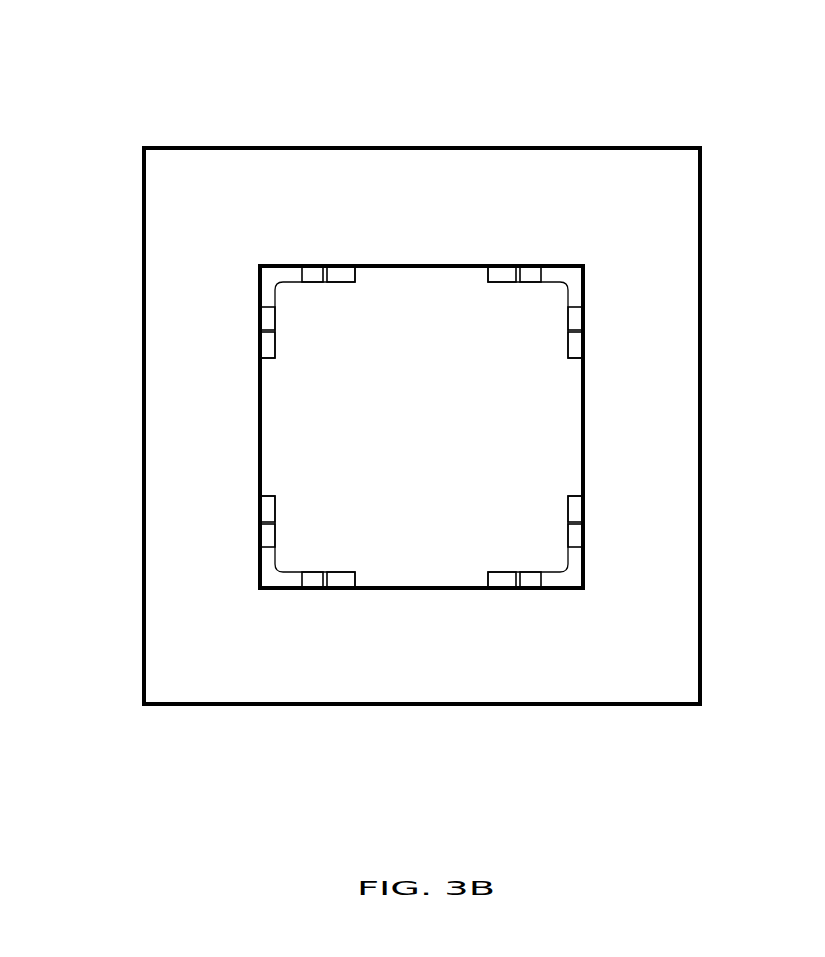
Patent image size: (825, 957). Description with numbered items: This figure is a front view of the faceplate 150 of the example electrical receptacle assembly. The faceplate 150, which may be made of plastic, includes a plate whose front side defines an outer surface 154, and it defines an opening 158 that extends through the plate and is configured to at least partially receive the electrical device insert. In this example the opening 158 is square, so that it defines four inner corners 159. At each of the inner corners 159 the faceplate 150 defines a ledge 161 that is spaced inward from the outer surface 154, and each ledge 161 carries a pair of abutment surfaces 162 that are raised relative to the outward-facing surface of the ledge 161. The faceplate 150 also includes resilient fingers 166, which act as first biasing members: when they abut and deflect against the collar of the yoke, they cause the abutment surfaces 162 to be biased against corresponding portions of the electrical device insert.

The faceplate 150 is at (80, 122).
The outer surface 154 is at (432, 202).
The opening 158 is at (323, 420).
The inner corners 159 is at (260, 265).
The ledges 161 is at (267, 292).
The abutment surfaces 162 is at (270, 318).
The resilient fingers 166 is at (270, 343).